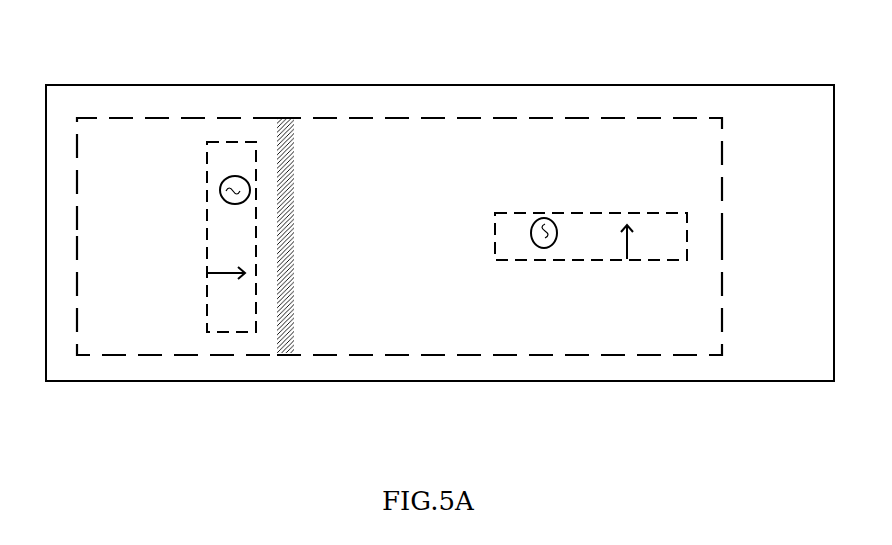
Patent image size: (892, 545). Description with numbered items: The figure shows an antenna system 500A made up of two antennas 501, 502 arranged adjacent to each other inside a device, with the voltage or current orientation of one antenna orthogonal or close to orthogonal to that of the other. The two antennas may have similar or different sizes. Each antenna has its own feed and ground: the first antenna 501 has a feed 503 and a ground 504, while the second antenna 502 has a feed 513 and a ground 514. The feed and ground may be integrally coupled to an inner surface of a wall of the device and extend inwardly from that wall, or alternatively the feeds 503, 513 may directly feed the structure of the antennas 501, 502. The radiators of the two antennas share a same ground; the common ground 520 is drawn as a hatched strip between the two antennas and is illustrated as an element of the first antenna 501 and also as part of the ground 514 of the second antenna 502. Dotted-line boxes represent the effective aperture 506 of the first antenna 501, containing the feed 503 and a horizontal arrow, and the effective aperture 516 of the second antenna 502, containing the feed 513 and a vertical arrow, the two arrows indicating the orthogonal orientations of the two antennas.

The antenna system 500A is at (368, 68).
The antenna 501 is at (135, 118).
The antenna 502 is at (490, 118).
The feed 503 is at (222, 196).
The ground 504 is at (146, 333).
The effective aperture 506 is at (208, 240).
The feed 513 is at (558, 232).
The ground 514 is at (464, 346).
The effective aperture 516 is at (495, 237).
The common ground 520 is at (297, 353).